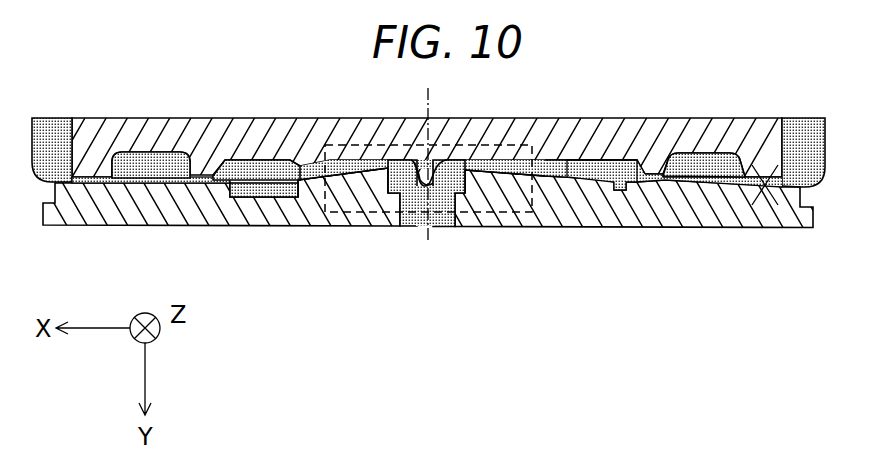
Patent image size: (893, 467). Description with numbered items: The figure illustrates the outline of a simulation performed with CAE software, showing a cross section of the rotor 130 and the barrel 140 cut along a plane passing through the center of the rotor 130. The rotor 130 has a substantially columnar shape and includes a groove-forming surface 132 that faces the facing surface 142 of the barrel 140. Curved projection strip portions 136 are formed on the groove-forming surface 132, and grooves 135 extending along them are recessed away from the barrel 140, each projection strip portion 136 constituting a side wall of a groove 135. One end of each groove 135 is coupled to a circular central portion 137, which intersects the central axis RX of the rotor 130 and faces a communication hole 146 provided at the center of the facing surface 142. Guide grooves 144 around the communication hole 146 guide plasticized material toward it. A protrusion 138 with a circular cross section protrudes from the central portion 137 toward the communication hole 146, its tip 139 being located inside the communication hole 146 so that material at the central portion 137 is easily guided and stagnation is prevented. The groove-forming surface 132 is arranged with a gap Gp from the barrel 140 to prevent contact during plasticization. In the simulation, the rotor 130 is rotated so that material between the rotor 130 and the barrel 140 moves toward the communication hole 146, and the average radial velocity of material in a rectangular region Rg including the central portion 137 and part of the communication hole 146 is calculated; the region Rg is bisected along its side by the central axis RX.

The rotor 130 is at (113, 115).
The groove-forming surface 132 is at (509, 146).
The groove 135 is at (170, 153).
The projection strip portion 136 is at (300, 172).
The central portion 137 is at (505, 200).
The protrusion 138 is at (418, 205).
The tip 139 is at (440, 200).
The barrel 140 is at (758, 265).
The facing surface 142 is at (576, 192).
The guide groove 144 is at (258, 198).
The communication hole 146 is at (392, 193).
The central axis RX is at (430, 108).
The region Rg is at (545, 128).
The gap Gp is at (768, 186).